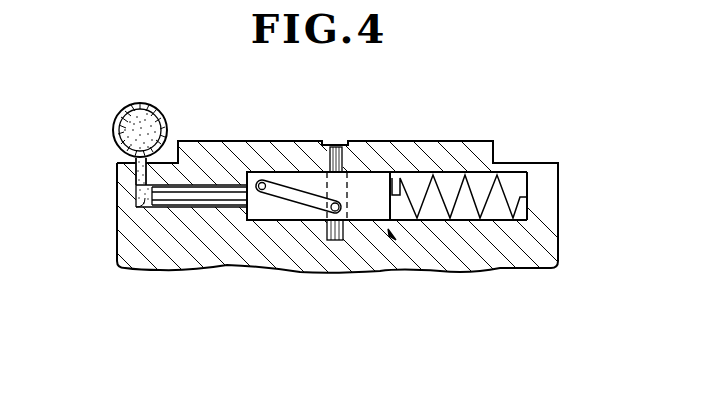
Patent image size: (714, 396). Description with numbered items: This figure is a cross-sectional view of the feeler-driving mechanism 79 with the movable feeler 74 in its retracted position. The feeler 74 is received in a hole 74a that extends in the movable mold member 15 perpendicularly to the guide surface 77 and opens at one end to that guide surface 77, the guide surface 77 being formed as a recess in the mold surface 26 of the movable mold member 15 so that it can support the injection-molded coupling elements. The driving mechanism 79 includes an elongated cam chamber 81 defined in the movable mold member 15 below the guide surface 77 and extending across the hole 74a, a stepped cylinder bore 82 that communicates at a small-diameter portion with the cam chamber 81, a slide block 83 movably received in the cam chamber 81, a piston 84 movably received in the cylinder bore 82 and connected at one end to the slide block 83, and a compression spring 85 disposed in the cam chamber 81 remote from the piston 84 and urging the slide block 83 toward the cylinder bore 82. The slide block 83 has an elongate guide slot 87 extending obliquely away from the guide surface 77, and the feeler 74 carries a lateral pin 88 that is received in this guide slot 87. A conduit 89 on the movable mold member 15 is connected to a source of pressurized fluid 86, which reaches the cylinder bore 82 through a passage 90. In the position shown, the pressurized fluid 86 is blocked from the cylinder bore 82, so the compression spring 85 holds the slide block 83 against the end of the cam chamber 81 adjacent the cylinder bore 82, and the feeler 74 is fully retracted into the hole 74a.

The movable mold member 15 is at (433, 143).
The mold surface 26 is at (470, 143).
The feeler 74 is at (335, 146).
The hole 74a is at (348, 168).
The guide surface 77 is at (336, 146).
The feeler-driving mechanism 79 is at (392, 236).
The cam chamber 81 is at (502, 207).
The cylinder bore 82 is at (118, 217).
The slide block 83 is at (280, 172).
The piston 84 is at (192, 193).
The compression spring 85 is at (508, 185).
The pressurized fluid 86 is at (118, 118).
The guide slot 87 is at (298, 200).
The lateral pin 88 is at (333, 240).
The conduit 89 is at (137, 103).
The passage 90 is at (132, 173).